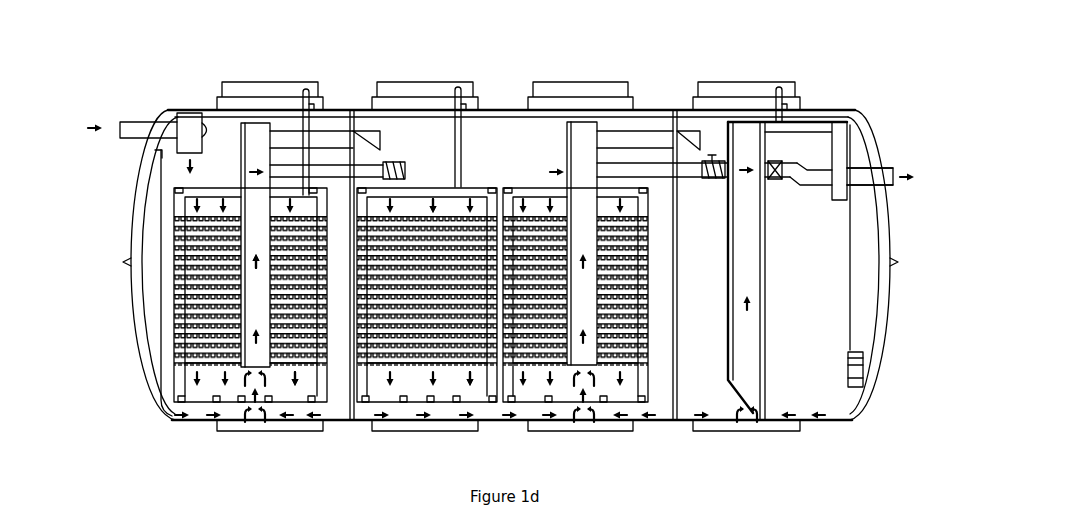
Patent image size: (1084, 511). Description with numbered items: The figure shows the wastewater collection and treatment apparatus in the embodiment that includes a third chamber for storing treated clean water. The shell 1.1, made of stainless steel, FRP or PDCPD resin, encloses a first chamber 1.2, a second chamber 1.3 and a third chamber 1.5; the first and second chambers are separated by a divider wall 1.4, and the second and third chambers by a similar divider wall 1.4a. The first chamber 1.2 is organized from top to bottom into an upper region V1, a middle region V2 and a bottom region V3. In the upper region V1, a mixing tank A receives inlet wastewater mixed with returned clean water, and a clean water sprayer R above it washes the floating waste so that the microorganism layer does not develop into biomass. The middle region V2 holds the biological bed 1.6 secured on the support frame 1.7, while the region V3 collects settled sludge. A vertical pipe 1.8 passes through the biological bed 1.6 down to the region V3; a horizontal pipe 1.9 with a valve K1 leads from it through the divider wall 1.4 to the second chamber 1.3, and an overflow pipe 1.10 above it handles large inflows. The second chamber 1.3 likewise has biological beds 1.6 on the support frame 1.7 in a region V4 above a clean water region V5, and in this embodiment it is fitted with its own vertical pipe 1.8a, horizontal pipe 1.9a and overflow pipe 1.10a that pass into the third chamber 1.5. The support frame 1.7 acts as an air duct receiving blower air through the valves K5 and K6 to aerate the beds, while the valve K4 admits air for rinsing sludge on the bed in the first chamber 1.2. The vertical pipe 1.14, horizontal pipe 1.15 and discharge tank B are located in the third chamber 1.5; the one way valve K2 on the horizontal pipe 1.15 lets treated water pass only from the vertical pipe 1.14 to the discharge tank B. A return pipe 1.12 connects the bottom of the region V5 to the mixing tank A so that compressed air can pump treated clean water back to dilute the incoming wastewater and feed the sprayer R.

The clean water sprayer R is at (207, 109).
The mixing tank A is at (187, 127).
The discharge tank B is at (840, 143).
The shell 1.1 is at (140, 280).
The first chamber 1.2 is at (198, 410).
The second chamber 1.3 is at (440, 410).
The divider wall 1.4 is at (348, 407).
The divider wall 1.4a is at (672, 403).
The third chamber 1.5 is at (830, 382).
The biological bed 1.6 is at (177, 332).
The support frame 1.7 is at (545, 397).
The vertical pipe 1.8 is at (255, 132).
The vertical pipe 1.8a is at (582, 133).
The horizontal pipe 1.9 is at (305, 163).
The horizontal pipe 1.9a is at (613, 167).
The overflow pipe 1.10 is at (357, 135).
The overflow pipe 1.10a is at (655, 130).
The return pipe 1.12 is at (855, 280).
The vertical pipe 1.14 is at (748, 143).
The horizontal pipe 1.15 is at (818, 177).
The valve K1 is at (353, 171).
The one way valve K2 is at (771, 172).
The valve K4 is at (306, 108).
The valve K5 is at (458, 105).
The valve K6 is at (782, 105).
The upper region V1 is at (208, 169).
The middle region V2 is at (229, 271).
The region V3 is at (298, 390).
The region V4 is at (441, 244).
The region V5 is at (485, 392).